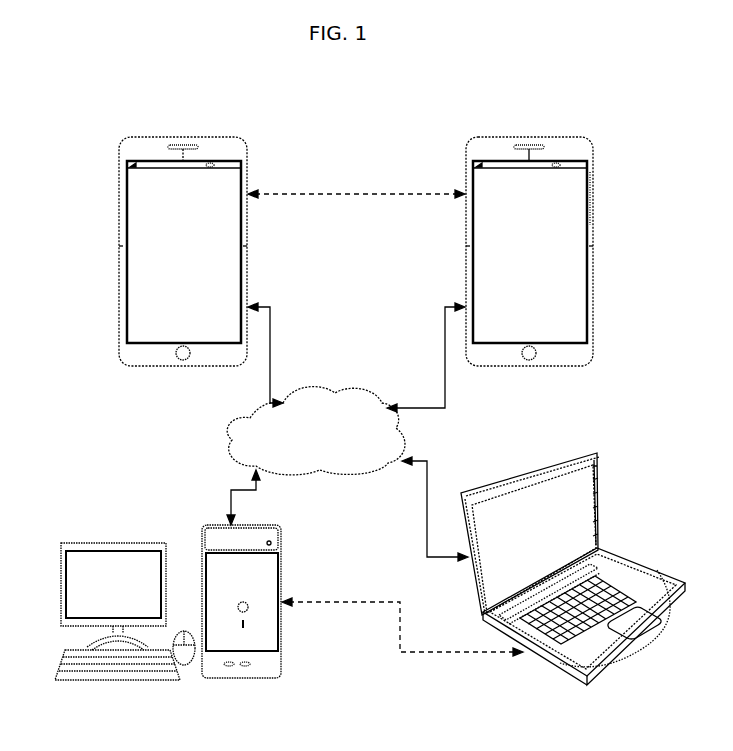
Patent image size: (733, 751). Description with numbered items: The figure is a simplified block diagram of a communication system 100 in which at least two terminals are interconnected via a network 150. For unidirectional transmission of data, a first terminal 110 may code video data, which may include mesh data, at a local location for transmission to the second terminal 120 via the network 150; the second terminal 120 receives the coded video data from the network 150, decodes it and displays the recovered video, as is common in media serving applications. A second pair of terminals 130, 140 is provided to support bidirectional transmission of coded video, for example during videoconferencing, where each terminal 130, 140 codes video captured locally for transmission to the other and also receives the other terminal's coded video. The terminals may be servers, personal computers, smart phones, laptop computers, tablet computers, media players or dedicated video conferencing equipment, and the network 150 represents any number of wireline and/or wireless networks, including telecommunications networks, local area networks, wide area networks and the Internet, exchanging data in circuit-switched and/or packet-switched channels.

The communication system 100 is at (286, 411).
The first terminal 110 is at (597, 480).
The second terminal 120 is at (281, 648).
The terminal 130 is at (161, 251).
The terminal 140 is at (466, 222).
The network 150 is at (316, 431).